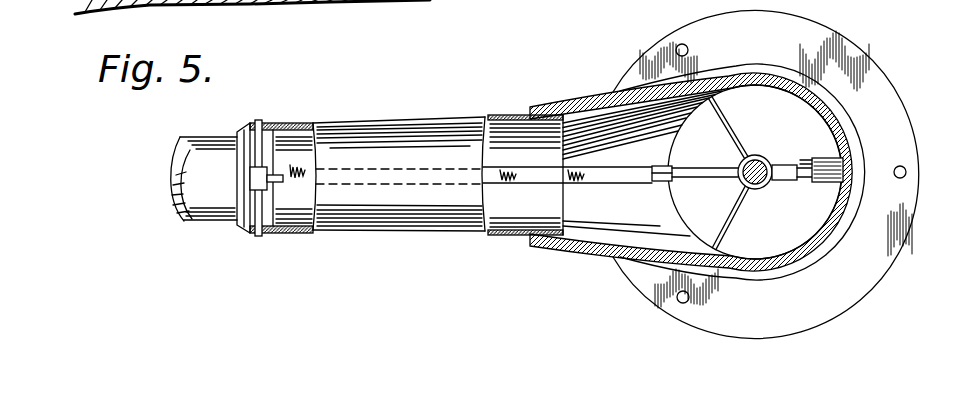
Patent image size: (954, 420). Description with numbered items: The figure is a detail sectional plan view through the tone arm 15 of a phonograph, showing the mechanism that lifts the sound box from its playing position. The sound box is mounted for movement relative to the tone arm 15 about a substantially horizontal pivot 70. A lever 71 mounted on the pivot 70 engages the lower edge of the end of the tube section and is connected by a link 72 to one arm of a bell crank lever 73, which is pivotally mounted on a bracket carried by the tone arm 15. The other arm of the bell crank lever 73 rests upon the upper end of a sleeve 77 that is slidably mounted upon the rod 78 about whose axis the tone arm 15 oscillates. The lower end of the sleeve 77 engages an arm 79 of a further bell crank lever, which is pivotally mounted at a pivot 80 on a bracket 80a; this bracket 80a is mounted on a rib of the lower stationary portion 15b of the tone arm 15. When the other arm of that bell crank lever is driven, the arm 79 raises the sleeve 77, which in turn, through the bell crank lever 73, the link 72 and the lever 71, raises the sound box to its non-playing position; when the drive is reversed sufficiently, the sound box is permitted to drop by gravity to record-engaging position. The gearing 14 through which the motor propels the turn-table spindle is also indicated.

The gearing 14 is at (210, 142).
The horizontal pivot 70 is at (300, 124).
The lever 71 is at (283, 184).
The tone arm 15 is at (430, 134).
The lower stationary portion of the tone arm 15b is at (893, 83).
The link 72 is at (607, 172).
The bell crank lever 73 is at (703, 158).
The sleeve 77 is at (740, 184).
The rod 78 is at (760, 160).
The arm of bell crank lever 79 is at (803, 167).
The bracket 80a is at (790, 184).
The pivot 80 is at (832, 181).